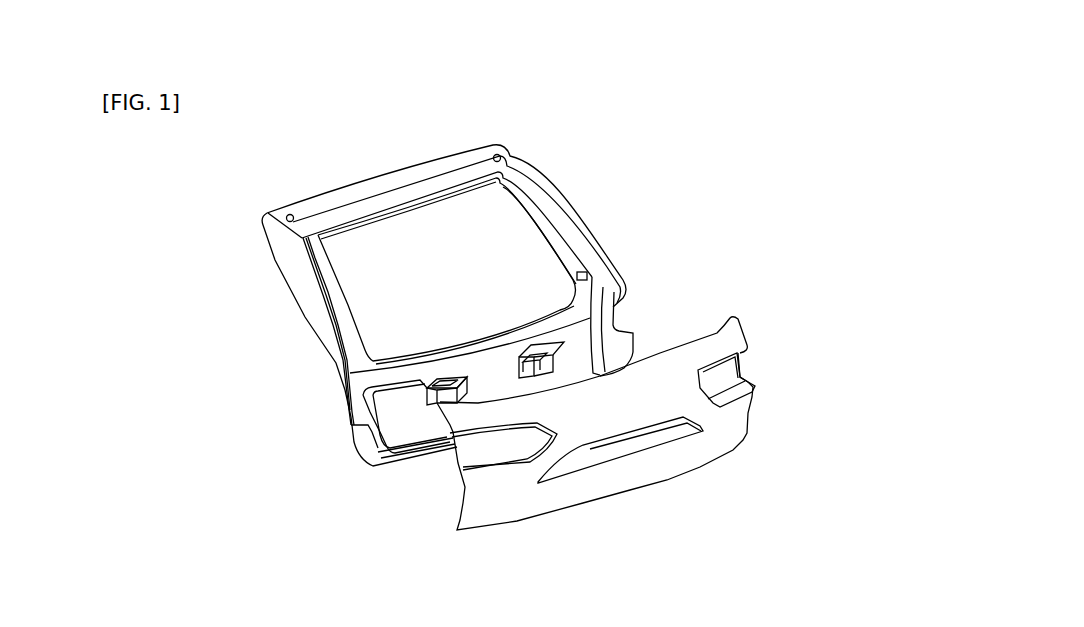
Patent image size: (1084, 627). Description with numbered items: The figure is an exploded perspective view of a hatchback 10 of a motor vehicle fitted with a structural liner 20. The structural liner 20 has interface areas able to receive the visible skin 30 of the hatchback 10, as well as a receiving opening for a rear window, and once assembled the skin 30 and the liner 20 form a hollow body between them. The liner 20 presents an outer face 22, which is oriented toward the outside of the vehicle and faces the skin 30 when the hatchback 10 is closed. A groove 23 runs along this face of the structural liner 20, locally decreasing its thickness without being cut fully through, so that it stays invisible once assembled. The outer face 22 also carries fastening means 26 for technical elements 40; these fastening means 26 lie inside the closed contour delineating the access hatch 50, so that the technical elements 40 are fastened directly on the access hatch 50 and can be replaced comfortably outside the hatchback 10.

The hatchback 10 is at (788, 292).
The structural liner 20 is at (425, 372).
The outer face 22 is at (410, 428).
The groove 23 is at (427, 393).
The fastening means 26 is at (430, 398).
The skin 30 is at (488, 493).
The technical elements 40 is at (556, 360).
The access hatch 50 is at (553, 342).